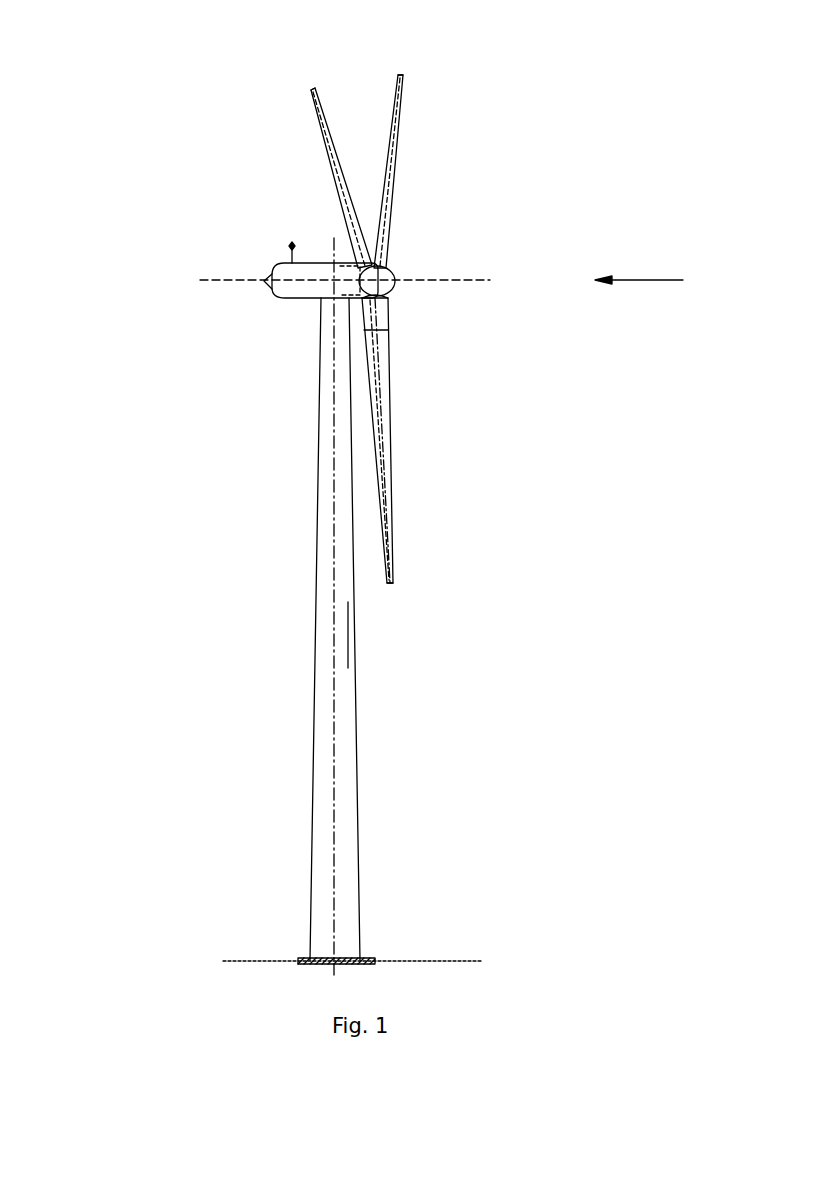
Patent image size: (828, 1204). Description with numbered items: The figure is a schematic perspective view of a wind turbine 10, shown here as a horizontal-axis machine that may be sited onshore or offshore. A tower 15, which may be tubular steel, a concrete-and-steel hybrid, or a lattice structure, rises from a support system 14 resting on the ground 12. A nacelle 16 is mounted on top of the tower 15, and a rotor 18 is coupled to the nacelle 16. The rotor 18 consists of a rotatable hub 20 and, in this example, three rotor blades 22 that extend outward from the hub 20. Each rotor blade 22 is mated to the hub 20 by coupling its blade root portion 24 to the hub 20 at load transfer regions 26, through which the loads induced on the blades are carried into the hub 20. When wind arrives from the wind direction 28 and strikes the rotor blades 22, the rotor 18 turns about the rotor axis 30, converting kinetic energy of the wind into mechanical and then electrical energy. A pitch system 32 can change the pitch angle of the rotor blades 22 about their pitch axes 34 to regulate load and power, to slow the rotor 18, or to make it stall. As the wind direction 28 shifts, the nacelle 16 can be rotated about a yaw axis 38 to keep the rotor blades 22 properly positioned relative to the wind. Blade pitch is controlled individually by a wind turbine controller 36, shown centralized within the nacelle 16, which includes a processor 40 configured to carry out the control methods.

The wind turbine 10 is at (125, 90).
The ground 12 is at (245, 960).
The support system 14 is at (302, 960).
The tower 15 is at (328, 608).
The nacelle 16 is at (292, 299).
The rotor 18 is at (405, 197).
The rotatable hub 20 is at (395, 277).
The rotor blade 22 is at (324, 150).
The blade root portion 24 is at (385, 372).
The load transfer regions 26 is at (378, 297).
The wind direction 28 is at (655, 280).
The rotor axis 30 is at (455, 282).
The pitch system 32 is at (372, 318).
The pitch axes 34 is at (310, 90).
The wind turbine controller 36 is at (333, 312).
The yaw axis 38 is at (350, 668).
The processor 40 is at (347, 250).